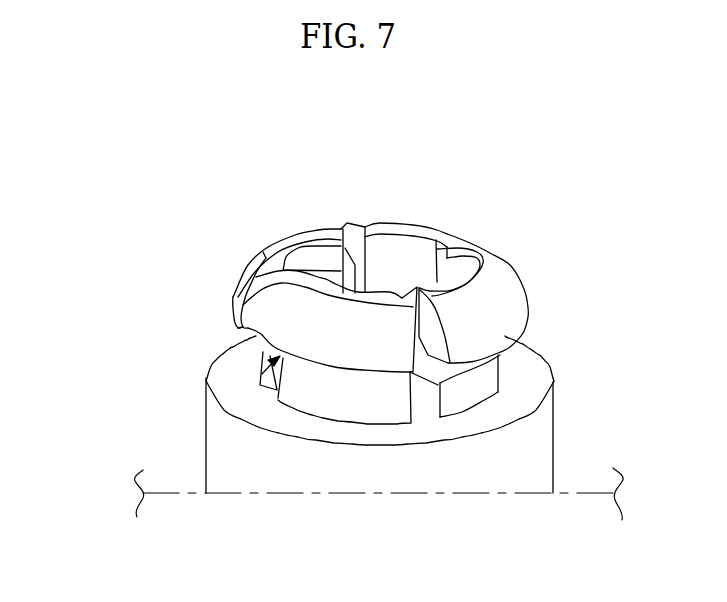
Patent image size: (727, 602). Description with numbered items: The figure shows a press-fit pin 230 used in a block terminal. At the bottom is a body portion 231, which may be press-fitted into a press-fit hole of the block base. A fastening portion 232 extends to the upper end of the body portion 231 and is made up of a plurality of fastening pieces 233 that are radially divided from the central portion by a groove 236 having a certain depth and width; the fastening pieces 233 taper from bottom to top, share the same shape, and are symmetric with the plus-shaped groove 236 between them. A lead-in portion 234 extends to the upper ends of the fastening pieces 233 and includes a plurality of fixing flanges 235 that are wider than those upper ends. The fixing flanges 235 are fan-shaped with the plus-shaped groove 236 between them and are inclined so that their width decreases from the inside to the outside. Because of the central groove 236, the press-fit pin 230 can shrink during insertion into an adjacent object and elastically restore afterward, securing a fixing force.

The press-fit pin 230 is at (237, 158).
The body portion 231 is at (206, 440).
The fastening portion 232 is at (263, 355).
The fastening pieces 233 is at (448, 386).
The lead-in portion 234 is at (239, 273).
The fixing flanges 235 is at (385, 338).
The groove 236 is at (385, 265).